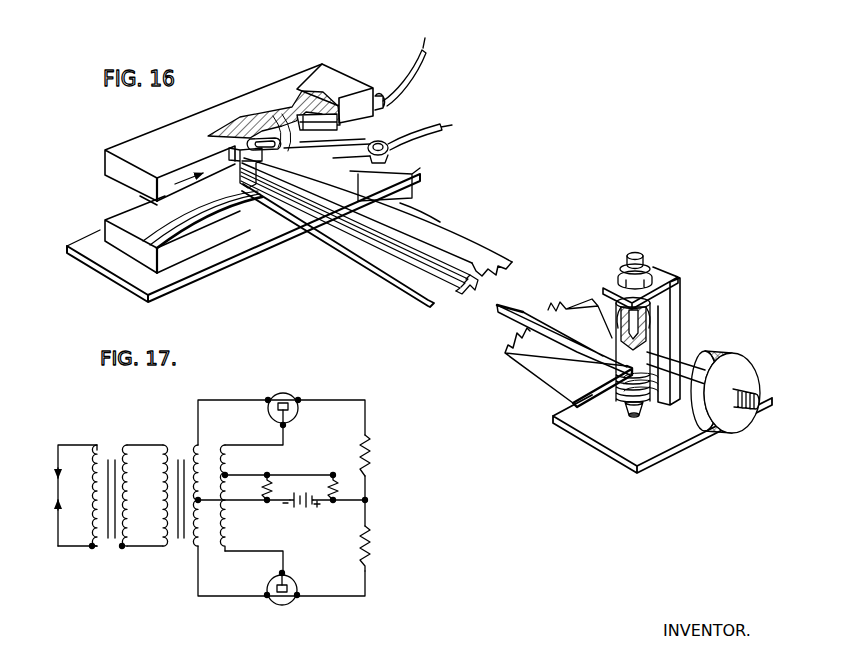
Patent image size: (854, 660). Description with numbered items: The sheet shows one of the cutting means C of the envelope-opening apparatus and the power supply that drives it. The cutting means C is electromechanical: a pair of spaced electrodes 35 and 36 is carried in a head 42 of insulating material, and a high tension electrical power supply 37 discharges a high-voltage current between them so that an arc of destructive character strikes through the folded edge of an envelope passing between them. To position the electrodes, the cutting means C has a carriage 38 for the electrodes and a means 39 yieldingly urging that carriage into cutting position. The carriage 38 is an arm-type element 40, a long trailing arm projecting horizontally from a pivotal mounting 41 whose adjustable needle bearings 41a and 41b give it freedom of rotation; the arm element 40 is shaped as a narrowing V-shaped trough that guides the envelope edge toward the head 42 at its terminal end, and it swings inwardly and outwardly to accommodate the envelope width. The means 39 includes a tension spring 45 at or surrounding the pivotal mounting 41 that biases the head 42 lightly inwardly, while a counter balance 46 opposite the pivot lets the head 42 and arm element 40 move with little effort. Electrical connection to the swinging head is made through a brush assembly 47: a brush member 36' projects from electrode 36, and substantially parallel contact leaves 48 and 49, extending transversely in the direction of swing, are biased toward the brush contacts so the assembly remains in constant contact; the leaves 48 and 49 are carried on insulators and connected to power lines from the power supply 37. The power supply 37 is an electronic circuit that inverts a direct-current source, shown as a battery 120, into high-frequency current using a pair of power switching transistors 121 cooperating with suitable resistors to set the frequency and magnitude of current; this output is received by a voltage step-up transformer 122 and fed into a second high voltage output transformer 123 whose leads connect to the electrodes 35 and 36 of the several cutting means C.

In FIG. 16, the electrode 35 is at (255, 134).
In FIG. 17, the electrode 35 is at (57, 477).
In FIG. 17, the electrode 36 is at (60, 523).
In FIG. 16, the brush member 36' is at (203, 237).
In FIG. 17, the high tension electrical power supply 37 is at (252, 398).
In FIG. 16, the carriage 38 is at (472, 246).
In FIG. 16, the means yieldingly urging the carriage 39 is at (614, 408).
In FIG. 16, the arm-type element 40 is at (477, 258).
In FIG. 16, the pivotal mounting 41 is at (640, 254).
In FIG. 16, the adjustable needle bearing 41a is at (652, 305).
In FIG. 16, the adjustable needle bearing 41b is at (636, 417).
In FIG. 16, the head 42 is at (331, 155).
In FIG. 16, the tension spring 45 is at (622, 414).
In FIG. 16, the counter balance 46 is at (728, 424).
In FIG. 16, the brush assembly 47 is at (268, 134).
In FIG. 16, the contact leaf 48 is at (329, 104).
In FIG. 16, the contact leaf 49 is at (383, 141).
In FIG. 16, the cutting means C is at (438, 224).
In FIG. 17, the battery 120 is at (298, 512).
In FIG. 17, the power switching transistor 121 is at (297, 398).
In FIG. 17, the voltage step-up transformer 122 is at (178, 551).
In FIG. 17, the high voltage output transformer 123 is at (103, 553).